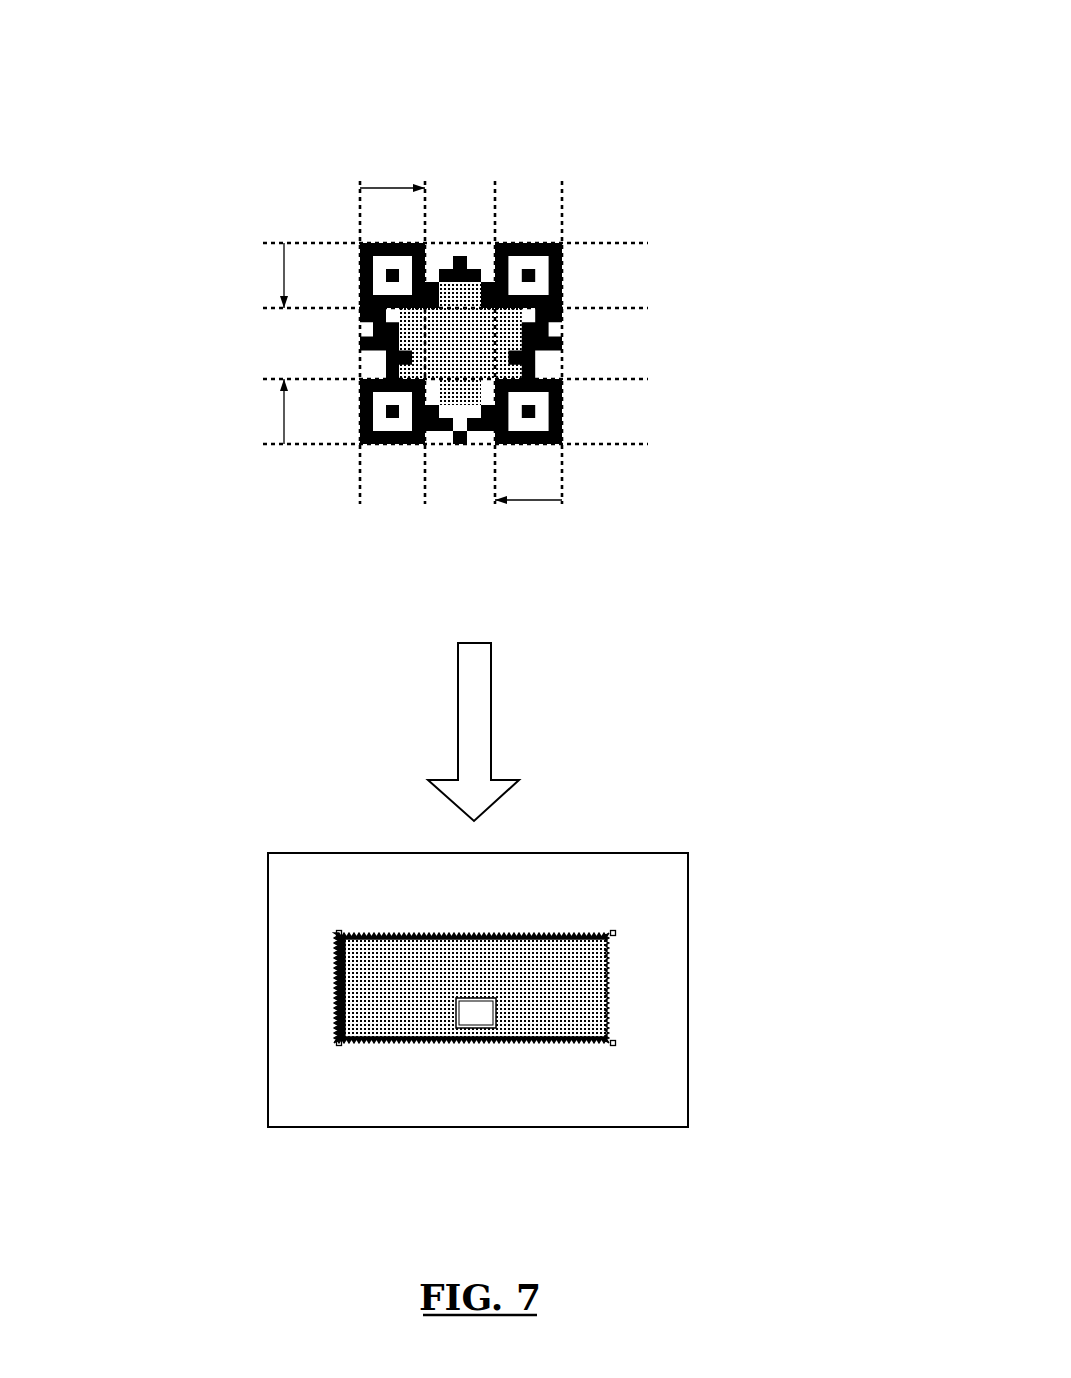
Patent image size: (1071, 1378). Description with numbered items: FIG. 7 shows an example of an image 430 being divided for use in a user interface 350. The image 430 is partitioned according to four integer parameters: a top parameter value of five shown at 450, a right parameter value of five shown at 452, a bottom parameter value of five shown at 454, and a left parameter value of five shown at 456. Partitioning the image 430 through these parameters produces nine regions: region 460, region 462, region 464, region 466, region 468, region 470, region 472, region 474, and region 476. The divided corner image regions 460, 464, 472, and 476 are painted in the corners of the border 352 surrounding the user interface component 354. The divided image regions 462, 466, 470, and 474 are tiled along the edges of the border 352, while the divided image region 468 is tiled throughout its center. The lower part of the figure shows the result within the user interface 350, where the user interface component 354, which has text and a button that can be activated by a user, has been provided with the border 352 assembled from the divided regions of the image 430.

The image 430 is at (745, 92).
The top parameter value 450 is at (209, 254).
The right parameter value 452 is at (548, 547).
The bottom parameter value 454 is at (190, 397).
The left parameter value 456 is at (372, 142).
The region 460 is at (360, 245).
The region 462 is at (455, 256).
The region 464 is at (510, 272).
The region 466 is at (375, 360).
The region 468 is at (457, 335).
The region 470 is at (550, 348).
The region 472 is at (380, 396).
The region 474 is at (466, 435).
The region 476 is at (562, 408).
The user interface 350 is at (334, 859).
The border 352 is at (560, 935).
The user interface component 354 is at (626, 1034).